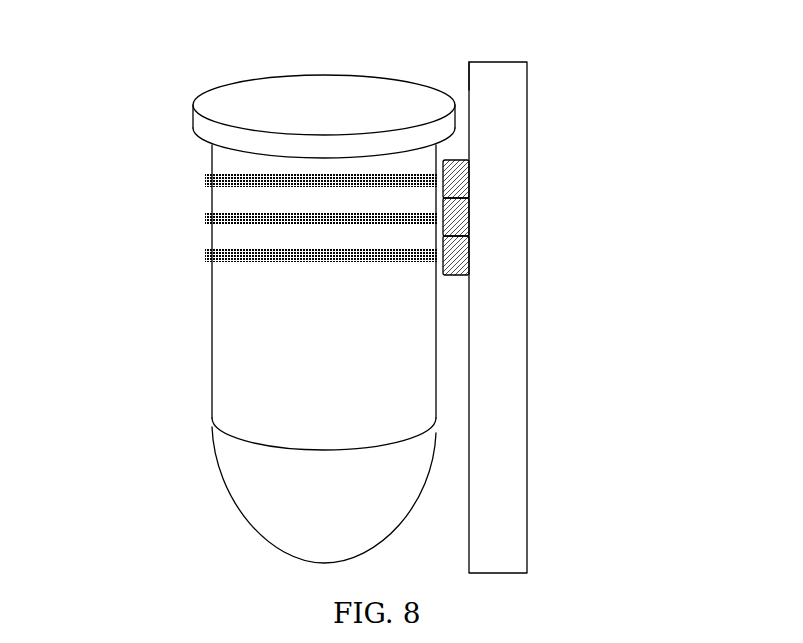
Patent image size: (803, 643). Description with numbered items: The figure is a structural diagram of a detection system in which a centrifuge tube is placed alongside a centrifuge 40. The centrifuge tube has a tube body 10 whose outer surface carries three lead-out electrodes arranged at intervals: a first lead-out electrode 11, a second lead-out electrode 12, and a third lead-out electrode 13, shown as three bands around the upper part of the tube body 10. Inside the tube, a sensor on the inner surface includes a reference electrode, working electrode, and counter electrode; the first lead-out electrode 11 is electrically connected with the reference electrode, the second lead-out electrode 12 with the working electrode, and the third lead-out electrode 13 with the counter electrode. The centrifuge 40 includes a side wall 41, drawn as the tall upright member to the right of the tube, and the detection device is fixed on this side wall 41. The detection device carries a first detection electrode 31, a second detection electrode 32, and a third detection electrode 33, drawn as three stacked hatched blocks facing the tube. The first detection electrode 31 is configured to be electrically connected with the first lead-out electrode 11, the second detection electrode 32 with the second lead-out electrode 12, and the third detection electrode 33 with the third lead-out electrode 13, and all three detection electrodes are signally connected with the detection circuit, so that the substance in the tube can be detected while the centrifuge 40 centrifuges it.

The tube body 10 is at (275, 362).
The first lead-out electrode 11 is at (232, 174).
The second lead-out electrode 12 is at (222, 212).
The third lead-out electrode 13 is at (212, 230).
The first detection electrode 31 is at (452, 175).
The second detection electrode 32 is at (452, 227).
The third detection electrode 33 is at (452, 262).
The centrifuge 40 is at (495, 358).
The side wall 41 is at (467, 83).